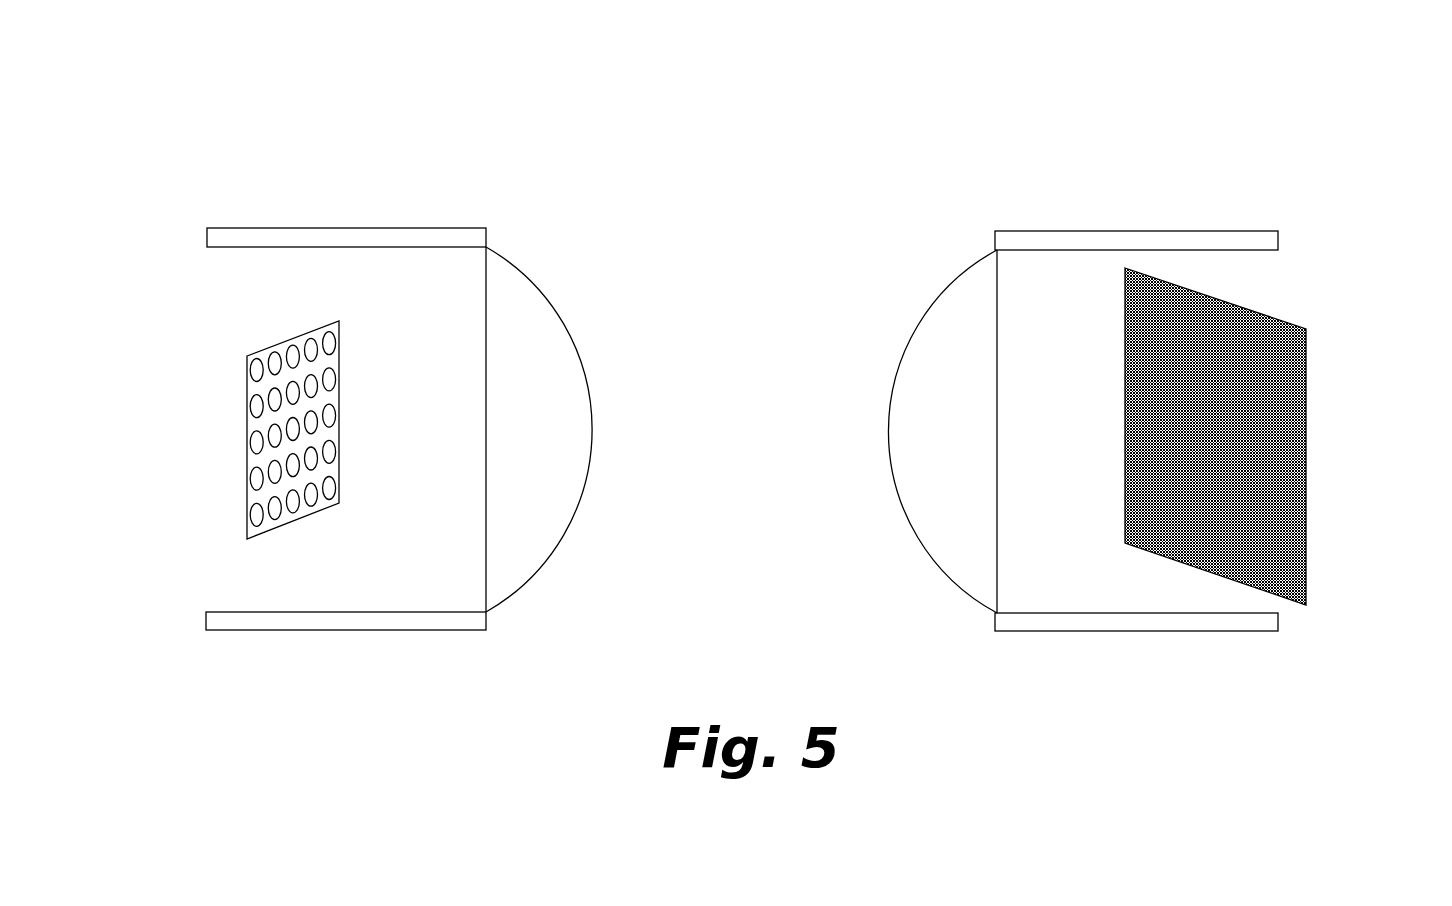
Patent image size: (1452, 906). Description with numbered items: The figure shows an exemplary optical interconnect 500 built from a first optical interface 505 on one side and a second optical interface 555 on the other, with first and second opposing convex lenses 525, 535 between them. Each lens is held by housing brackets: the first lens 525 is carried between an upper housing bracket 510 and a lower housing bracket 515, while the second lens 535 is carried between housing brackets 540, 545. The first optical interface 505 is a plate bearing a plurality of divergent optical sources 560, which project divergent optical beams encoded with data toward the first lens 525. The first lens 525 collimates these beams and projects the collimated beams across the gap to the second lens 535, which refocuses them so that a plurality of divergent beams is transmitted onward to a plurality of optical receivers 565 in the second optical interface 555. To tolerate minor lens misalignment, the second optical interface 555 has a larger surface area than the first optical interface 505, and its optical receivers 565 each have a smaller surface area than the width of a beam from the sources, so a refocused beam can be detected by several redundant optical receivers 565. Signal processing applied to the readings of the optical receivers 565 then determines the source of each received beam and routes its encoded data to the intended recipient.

The optical interconnect 500 is at (170, 153).
The first optical interface 505 is at (246, 439).
The housing bracket 510 is at (298, 238).
The housing bracket 515 is at (327, 619).
The first lens 525 is at (507, 307).
The second lens 535 is at (980, 283).
The housing bracket 540 is at (1118, 240).
The housing bracket 545 is at (1148, 620).
The second optical interface 555 is at (1333, 475).
The divergent optical sources 560 is at (332, 380).
The optical receivers 565 is at (1186, 418).